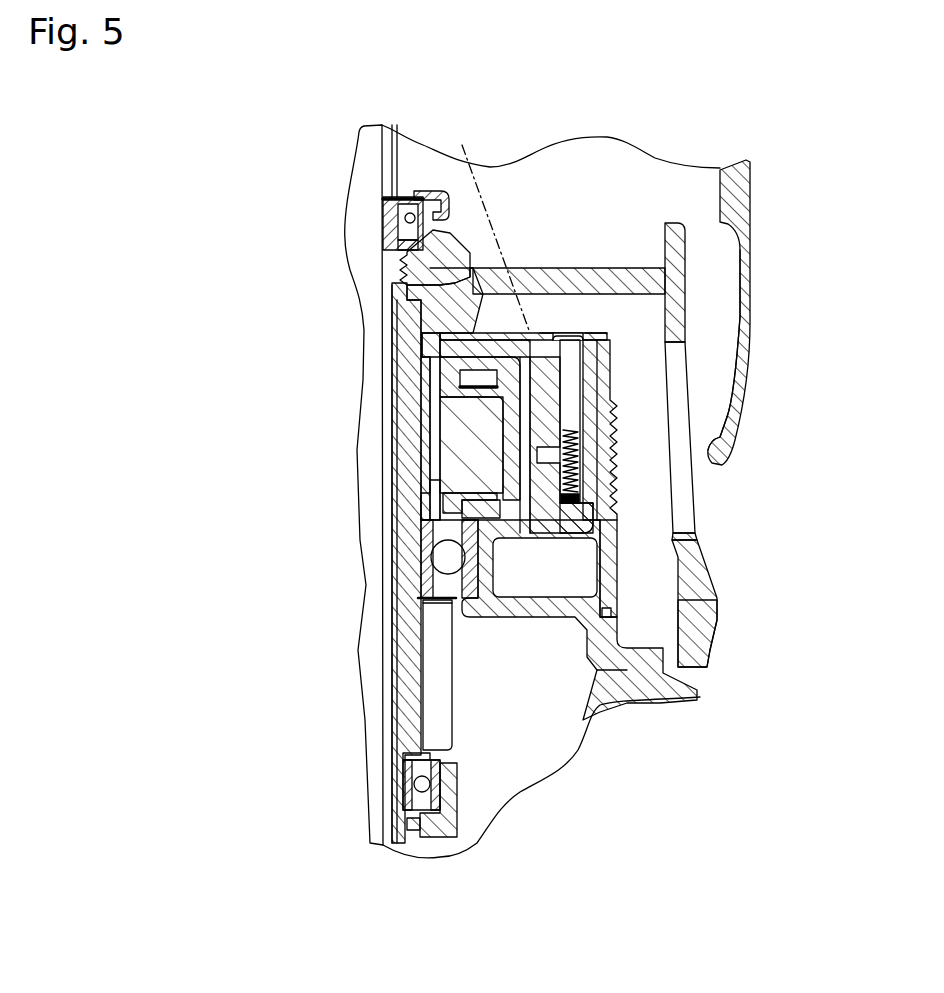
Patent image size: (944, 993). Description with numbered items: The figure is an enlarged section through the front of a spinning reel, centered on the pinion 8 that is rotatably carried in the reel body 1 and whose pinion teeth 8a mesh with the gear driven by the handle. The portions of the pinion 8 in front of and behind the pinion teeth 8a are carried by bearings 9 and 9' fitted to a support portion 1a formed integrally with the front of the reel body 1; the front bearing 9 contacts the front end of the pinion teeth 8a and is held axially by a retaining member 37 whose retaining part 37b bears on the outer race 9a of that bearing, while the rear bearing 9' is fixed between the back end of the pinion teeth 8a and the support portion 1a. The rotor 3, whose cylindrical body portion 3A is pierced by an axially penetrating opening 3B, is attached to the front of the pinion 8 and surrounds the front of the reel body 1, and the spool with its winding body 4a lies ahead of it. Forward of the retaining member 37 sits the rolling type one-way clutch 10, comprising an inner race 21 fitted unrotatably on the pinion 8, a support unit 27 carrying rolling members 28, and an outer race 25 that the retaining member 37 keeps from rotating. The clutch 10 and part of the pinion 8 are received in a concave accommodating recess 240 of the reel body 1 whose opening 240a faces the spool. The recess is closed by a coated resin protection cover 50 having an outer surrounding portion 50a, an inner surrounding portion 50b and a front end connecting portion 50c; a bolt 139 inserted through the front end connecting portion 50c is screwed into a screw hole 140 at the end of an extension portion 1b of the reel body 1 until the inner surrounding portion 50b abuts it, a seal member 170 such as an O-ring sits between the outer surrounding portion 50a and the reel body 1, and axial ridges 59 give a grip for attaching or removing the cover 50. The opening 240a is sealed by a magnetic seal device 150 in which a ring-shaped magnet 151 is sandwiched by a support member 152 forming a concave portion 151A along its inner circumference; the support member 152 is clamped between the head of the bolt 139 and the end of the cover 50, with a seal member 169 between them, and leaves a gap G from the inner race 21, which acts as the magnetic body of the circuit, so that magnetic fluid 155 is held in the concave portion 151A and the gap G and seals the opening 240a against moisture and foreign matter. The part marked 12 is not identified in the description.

The reel body 1 is at (625, 635).
The support portion 1a is at (437, 798).
The extension portion 1b is at (680, 512).
The rotor 3 is at (677, 318).
The body portion 3A is at (700, 550).
The opening 3B is at (690, 478).
The winding body 4a is at (750, 378).
The pinion 8 is at (393, 695).
The pinion teeth 8a is at (440, 703).
The bearing 9 is at (379, 559).
The bearing 9' is at (494, 815).
The outer race 9a is at (473, 595).
The rolling type one-way clutch 10 is at (455, 410).
The housing wall 12 is at (372, 762).
The inner race 21 is at (470, 460).
The outer race 25 is at (540, 538).
The support unit 27 is at (512, 470).
The rolling members 28 is at (462, 475).
The retaining member 37 is at (546, 574).
The retaining part 37b is at (433, 520).
The protection cover 50 is at (625, 578).
The outer surrounding portion 50a is at (605, 378).
The inner surrounding portion 50b is at (540, 357).
The front end connecting portion 50c is at (590, 350).
The ridges 59 is at (620, 457).
The bolt 139 is at (612, 393).
The screw hole 140 is at (733, 455).
The magnetic seal device 150 is at (414, 197).
The magnet 151 is at (415, 295).
The concave portion 151A is at (412, 303).
The support member 152 is at (455, 191).
The magnetic fluid 155 is at (418, 328).
The seal member 169 is at (547, 333).
The seal member 170 is at (690, 625).
The accommodating recess 240 is at (443, 347).
The opening 240a is at (490, 328).
The gap G is at (432, 336).